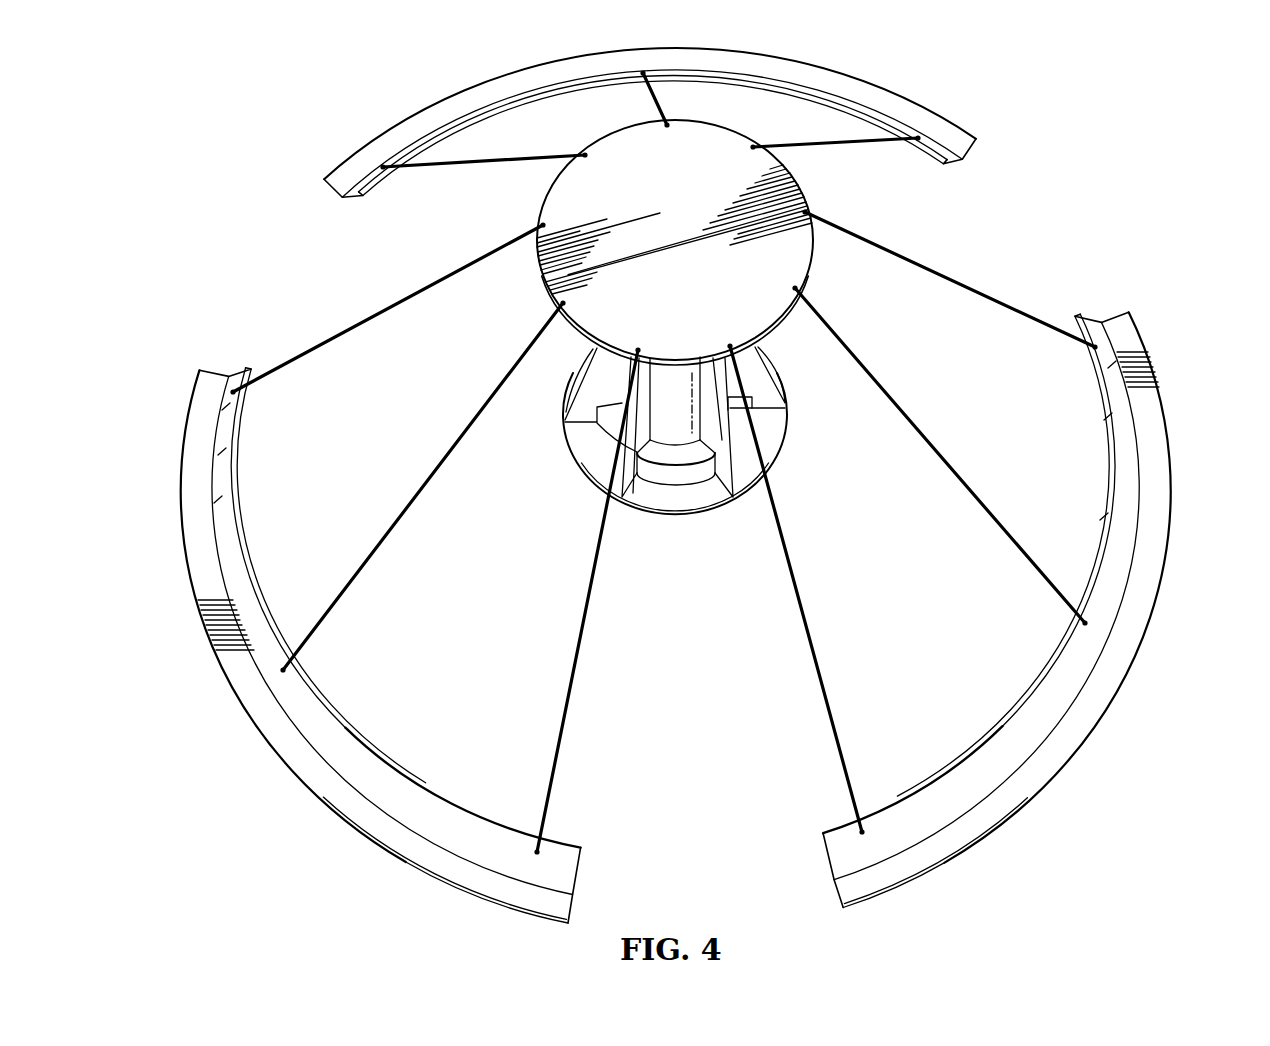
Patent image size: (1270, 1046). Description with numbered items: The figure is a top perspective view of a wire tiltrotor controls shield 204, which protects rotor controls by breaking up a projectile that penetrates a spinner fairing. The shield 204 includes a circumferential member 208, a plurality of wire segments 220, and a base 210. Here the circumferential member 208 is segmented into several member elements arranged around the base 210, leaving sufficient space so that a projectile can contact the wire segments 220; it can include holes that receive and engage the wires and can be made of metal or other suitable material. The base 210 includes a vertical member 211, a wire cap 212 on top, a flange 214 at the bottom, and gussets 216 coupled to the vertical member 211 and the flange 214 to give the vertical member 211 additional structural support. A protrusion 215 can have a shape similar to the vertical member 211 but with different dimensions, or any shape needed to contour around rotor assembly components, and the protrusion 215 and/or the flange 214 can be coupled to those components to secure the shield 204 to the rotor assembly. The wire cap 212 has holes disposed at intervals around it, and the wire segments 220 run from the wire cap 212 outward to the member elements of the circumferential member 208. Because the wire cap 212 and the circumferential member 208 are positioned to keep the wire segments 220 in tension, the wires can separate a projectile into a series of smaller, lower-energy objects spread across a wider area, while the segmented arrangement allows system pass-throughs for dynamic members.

The wire tiltrotor controls shield 204 is at (346, 104).
The circumferential member 208 is at (894, 93).
The base 210 is at (669, 444).
The vertical member 211 is at (678, 433).
The wire cap 212 is at (812, 262).
The flange 214 is at (715, 505).
The protrusion 215 is at (613, 427).
The gusset 216 is at (578, 382).
The wire segments 220 is at (472, 163).